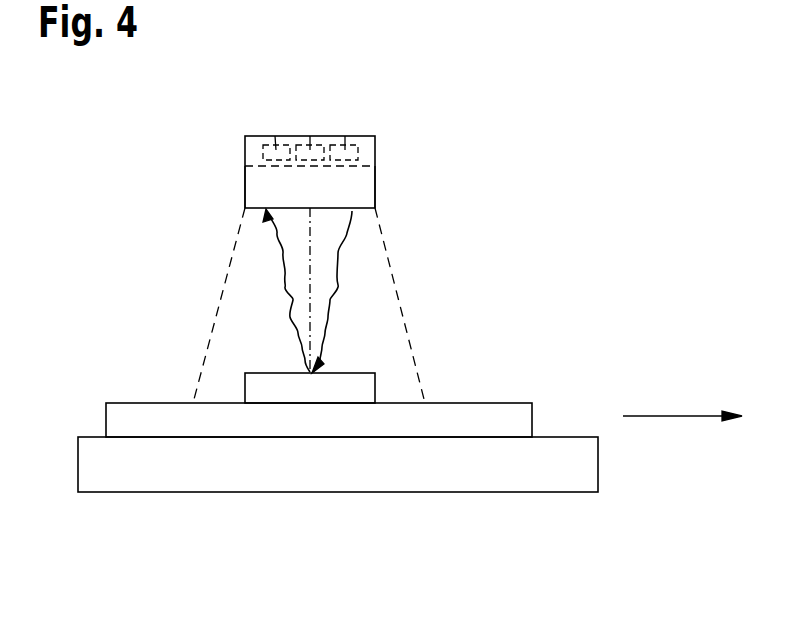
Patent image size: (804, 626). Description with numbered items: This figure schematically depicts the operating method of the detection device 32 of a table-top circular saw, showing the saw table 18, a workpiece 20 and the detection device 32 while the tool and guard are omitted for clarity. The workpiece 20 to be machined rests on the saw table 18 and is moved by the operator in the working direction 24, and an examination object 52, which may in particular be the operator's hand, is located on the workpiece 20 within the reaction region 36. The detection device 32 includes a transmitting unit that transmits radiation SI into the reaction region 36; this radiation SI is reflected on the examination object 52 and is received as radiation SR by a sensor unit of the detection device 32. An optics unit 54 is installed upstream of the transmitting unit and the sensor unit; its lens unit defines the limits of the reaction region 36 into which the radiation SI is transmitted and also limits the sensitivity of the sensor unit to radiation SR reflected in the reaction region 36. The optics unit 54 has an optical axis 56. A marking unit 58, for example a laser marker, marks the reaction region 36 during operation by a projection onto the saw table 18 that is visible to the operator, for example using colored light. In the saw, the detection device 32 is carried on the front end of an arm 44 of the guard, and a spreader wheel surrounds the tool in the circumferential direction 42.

The saw table 18 is at (585, 468).
The workpiece 20 is at (512, 415).
The working direction 24 is at (668, 415).
The detection device 32 is at (376, 182).
The reaction region 36 is at (372, 350).
The circumferential direction 42 is at (346, 135).
The arm 44 is at (275, 135).
The examination object 52 is at (252, 390).
The optics unit 54 is at (258, 190).
The optical axis 56 is at (312, 247).
The marking unit 58 is at (310, 135).
The reflected radiation SR is at (285, 284).
The transmitted radiation SI is at (337, 286).